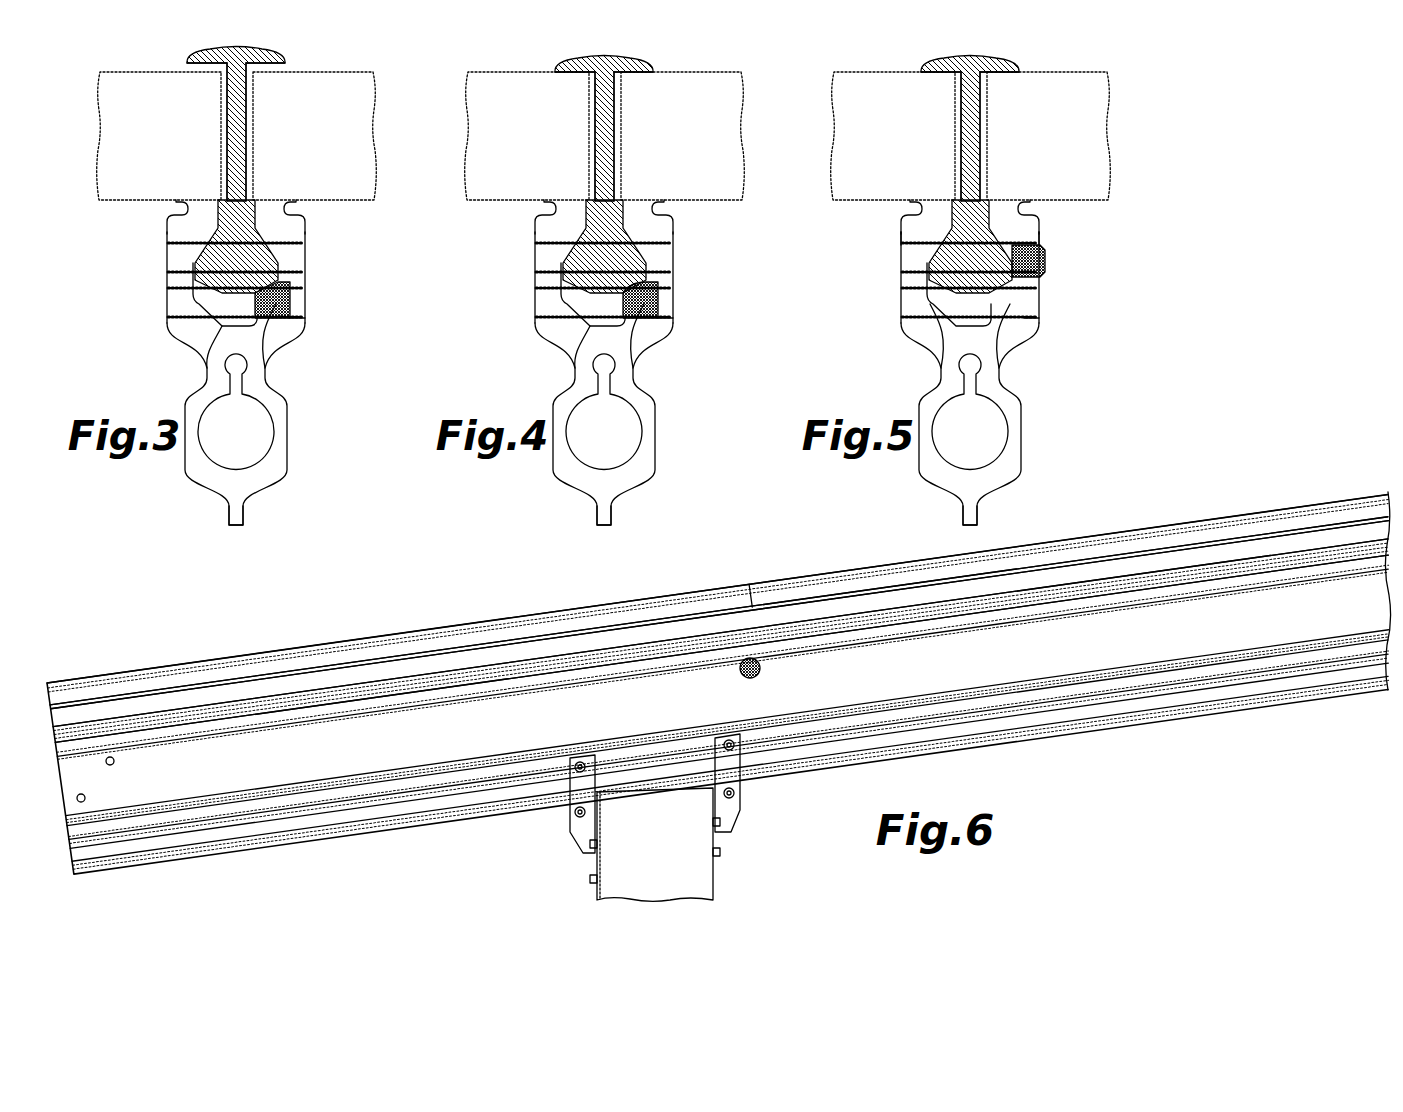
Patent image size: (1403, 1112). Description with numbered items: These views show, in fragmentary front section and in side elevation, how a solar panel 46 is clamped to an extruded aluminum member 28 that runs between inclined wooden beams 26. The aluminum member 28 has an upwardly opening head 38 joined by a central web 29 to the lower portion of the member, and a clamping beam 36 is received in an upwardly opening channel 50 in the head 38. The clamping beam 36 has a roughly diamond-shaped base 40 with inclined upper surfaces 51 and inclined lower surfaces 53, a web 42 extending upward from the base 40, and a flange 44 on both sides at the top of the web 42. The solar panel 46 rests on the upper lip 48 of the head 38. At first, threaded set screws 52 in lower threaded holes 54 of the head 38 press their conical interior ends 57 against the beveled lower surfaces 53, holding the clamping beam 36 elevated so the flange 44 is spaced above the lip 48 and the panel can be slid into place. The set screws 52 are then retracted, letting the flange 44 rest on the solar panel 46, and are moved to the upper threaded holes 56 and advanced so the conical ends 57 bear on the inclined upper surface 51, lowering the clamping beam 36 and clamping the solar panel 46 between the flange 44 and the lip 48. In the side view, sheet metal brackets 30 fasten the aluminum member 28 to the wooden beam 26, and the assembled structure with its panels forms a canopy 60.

In FIG. 6, the wooden beam 26 is at (713, 893).
In FIG. 3, the aluminum member 28 is at (288, 435).
In FIG. 4, the aluminum member 28 is at (624, 424).
In FIG. 5, the aluminum member 28 is at (990, 424).
In FIG. 6, the aluminum member 28 is at (390, 832).
In FIG. 3, the central web 29 is at (229, 520).
In FIG. 4, the central web 29 is at (577, 520).
In FIG. 5, the central web 29 is at (943, 520).
In FIG. 6, the sheet metal bracket 30 is at (572, 820).
In FIG. 3, the clamping beam 36 is at (236, 46).
In FIG. 4, the clamping beam 36 is at (604, 106).
In FIG. 5, the clamping beam 36 is at (970, 106).
In FIG. 6, the clamping beam 36 is at (460, 621).
In FIG. 3, the head 38 is at (168, 234).
In FIG. 4, the head 38 is at (576, 268).
In FIG. 5, the head 38 is at (1003, 308).
In FIG. 3, the base 40 is at (262, 258).
In FIG. 4, the base 40 is at (645, 246).
In FIG. 5, the base 40 is at (938, 285).
In FIG. 3, the web 42 is at (247, 135).
In FIG. 4, the web 42 is at (634, 136).
In FIG. 5, the web 42 is at (1000, 136).
In FIG. 3, the flange 44 is at (205, 50).
In FIG. 4, the flange 44 is at (584, 40).
In FIG. 5, the flange 44 is at (950, 40).
In FIG. 3, the solar panel 46 is at (118, 72).
In FIG. 4, the solar panel 46 is at (605, 109).
In FIG. 5, the solar panel 46 is at (971, 109).
In FIG. 3, the upper lip 48 is at (180, 205).
In FIG. 4, the upper lip 48 is at (604, 198).
In FIG. 5, the upper lip 48 is at (970, 198).
In FIG. 3, the channel 50 is at (230, 303).
In FIG. 4, the channel 50 is at (554, 302).
In FIG. 5, the channel 50 is at (959, 294).
In FIG. 5, the inclined upper surface 51 is at (968, 227).
In FIG. 3, the set screw 52 is at (292, 299).
In FIG. 4, the set screw 52 is at (680, 325).
In FIG. 5, the set screw 52 is at (1067, 257).
In FIG. 3, the inclined lower surface 53 is at (282, 292).
In FIG. 4, the inclined lower surface 53 is at (686, 310).
In FIG. 5, the inclined lower surface 53 is at (976, 334).
In FIG. 3, the lower threaded hole 54 is at (300, 327).
In FIG. 4, the lower threaded hole 54 is at (697, 333).
In FIG. 5, the lower threaded hole 54 is at (1055, 332).
In FIG. 6, the lower threaded hole 54 is at (210, 700).
In FIG. 3, the upper threaded hole 56 is at (175, 251).
In FIG. 4, the upper threaded hole 56 is at (572, 280).
In FIG. 5, the upper threaded hole 56 is at (965, 280).
In FIG. 6, the upper threaded hole 56 is at (304, 680).
In FIG. 3, the conical interior end 57 is at (212, 330).
In FIG. 4, the conical interior end 57 is at (542, 350).
In FIG. 6, the canopy 60 is at (726, 588).